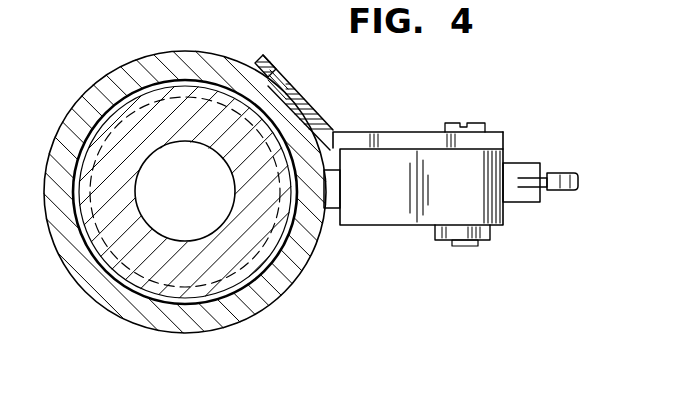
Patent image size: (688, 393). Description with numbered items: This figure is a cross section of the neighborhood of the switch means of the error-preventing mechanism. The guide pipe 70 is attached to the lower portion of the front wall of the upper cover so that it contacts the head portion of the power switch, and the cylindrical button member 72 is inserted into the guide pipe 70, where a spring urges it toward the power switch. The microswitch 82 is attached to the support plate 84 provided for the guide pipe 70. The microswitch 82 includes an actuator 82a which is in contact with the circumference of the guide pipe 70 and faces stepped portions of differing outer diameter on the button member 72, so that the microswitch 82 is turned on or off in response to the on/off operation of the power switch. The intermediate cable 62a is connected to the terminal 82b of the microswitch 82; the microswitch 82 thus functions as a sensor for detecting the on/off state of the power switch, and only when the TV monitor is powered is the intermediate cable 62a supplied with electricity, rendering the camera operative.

The guide pipe 70 is at (208, 50).
The button member 72 is at (116, 106).
The support plate 84 is at (367, 131).
The microswitch 82 is at (400, 226).
The actuator 82a is at (328, 210).
The terminal 82b is at (522, 162).
The intermediate cable 62a is at (567, 172).